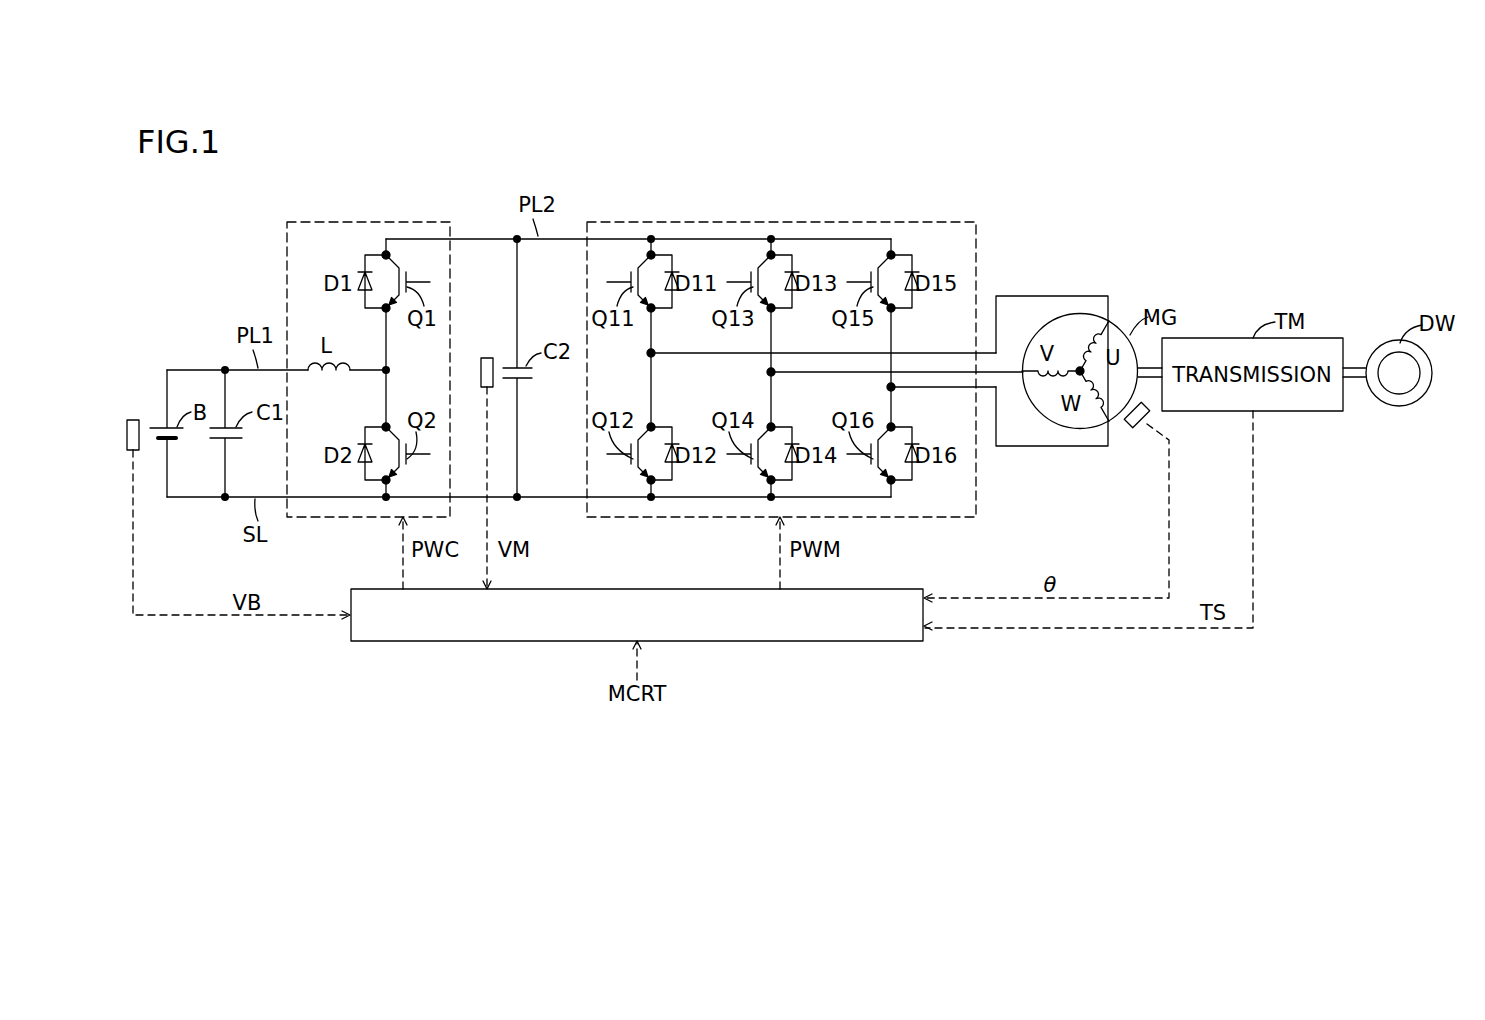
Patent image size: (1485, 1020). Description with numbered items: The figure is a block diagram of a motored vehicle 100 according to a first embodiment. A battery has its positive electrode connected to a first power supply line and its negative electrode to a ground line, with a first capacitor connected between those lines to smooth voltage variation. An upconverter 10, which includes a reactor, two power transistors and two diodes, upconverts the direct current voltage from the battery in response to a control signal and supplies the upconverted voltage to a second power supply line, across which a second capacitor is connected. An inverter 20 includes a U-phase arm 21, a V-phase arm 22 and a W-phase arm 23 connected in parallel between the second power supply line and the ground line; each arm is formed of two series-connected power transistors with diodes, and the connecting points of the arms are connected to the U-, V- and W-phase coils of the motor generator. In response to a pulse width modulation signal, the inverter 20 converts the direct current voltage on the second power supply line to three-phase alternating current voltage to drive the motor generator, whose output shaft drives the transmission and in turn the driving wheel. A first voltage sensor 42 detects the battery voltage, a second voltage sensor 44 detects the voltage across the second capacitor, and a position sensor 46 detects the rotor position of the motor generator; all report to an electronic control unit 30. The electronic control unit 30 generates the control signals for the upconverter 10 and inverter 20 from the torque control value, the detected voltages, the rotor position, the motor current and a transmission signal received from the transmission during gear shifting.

The motored vehicle 100 is at (1185, 179).
The upconverter 10 is at (366, 222).
The inverter 20 is at (912, 222).
The U-phase arm 21 is at (620, 365).
The V-phase arm 22 is at (741, 384).
The W-phase arm 23 is at (858, 399).
The electronic control unit 30 is at (863, 589).
The voltage sensor 42 is at (133, 418).
The voltage sensor 44 is at (487, 356).
The position sensor 46 is at (1131, 426).